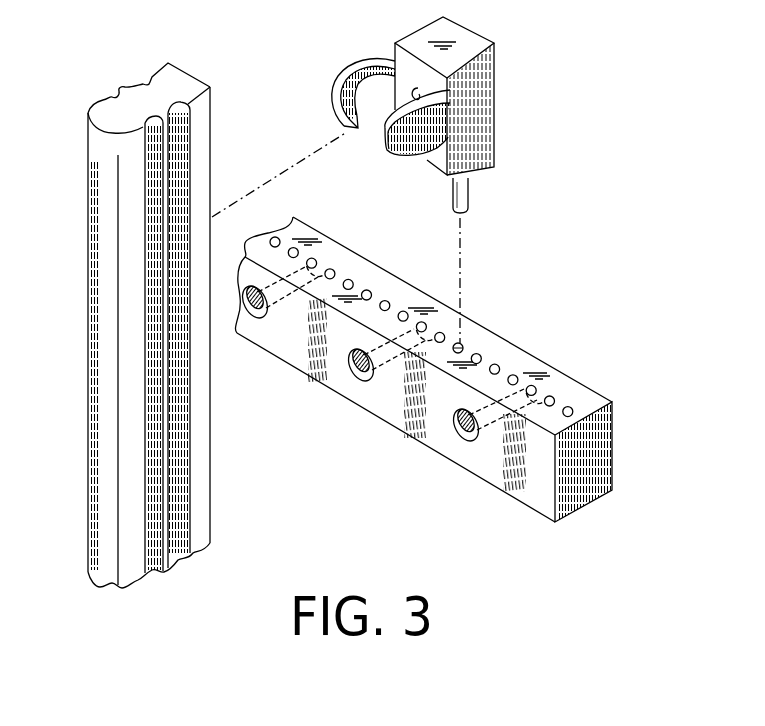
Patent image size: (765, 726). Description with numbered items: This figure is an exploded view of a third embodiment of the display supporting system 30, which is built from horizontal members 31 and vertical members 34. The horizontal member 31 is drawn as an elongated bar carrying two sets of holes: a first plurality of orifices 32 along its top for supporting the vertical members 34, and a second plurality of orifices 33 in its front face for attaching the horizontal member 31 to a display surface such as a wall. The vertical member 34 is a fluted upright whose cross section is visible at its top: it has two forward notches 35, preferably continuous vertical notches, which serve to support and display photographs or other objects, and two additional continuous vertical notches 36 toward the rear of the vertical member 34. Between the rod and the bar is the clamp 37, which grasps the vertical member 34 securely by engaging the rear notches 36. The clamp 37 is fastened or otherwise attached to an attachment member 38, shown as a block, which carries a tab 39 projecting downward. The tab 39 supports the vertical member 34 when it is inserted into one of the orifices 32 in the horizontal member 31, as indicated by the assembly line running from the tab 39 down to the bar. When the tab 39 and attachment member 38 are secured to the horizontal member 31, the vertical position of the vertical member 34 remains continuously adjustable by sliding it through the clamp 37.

The supporting system 30 is at (446, 407).
The horizontal member 31 is at (578, 510).
The first plurality of orifices 32 is at (574, 407).
The second plurality of orifices 33 is at (363, 373).
The vertical member 34 is at (162, 298).
The forward notch 35 is at (104, 99).
The continuous vertical notch 36 is at (143, 85).
The clamp 37 is at (362, 62).
The attachment member 38 is at (485, 125).
The tab 39 is at (468, 190).